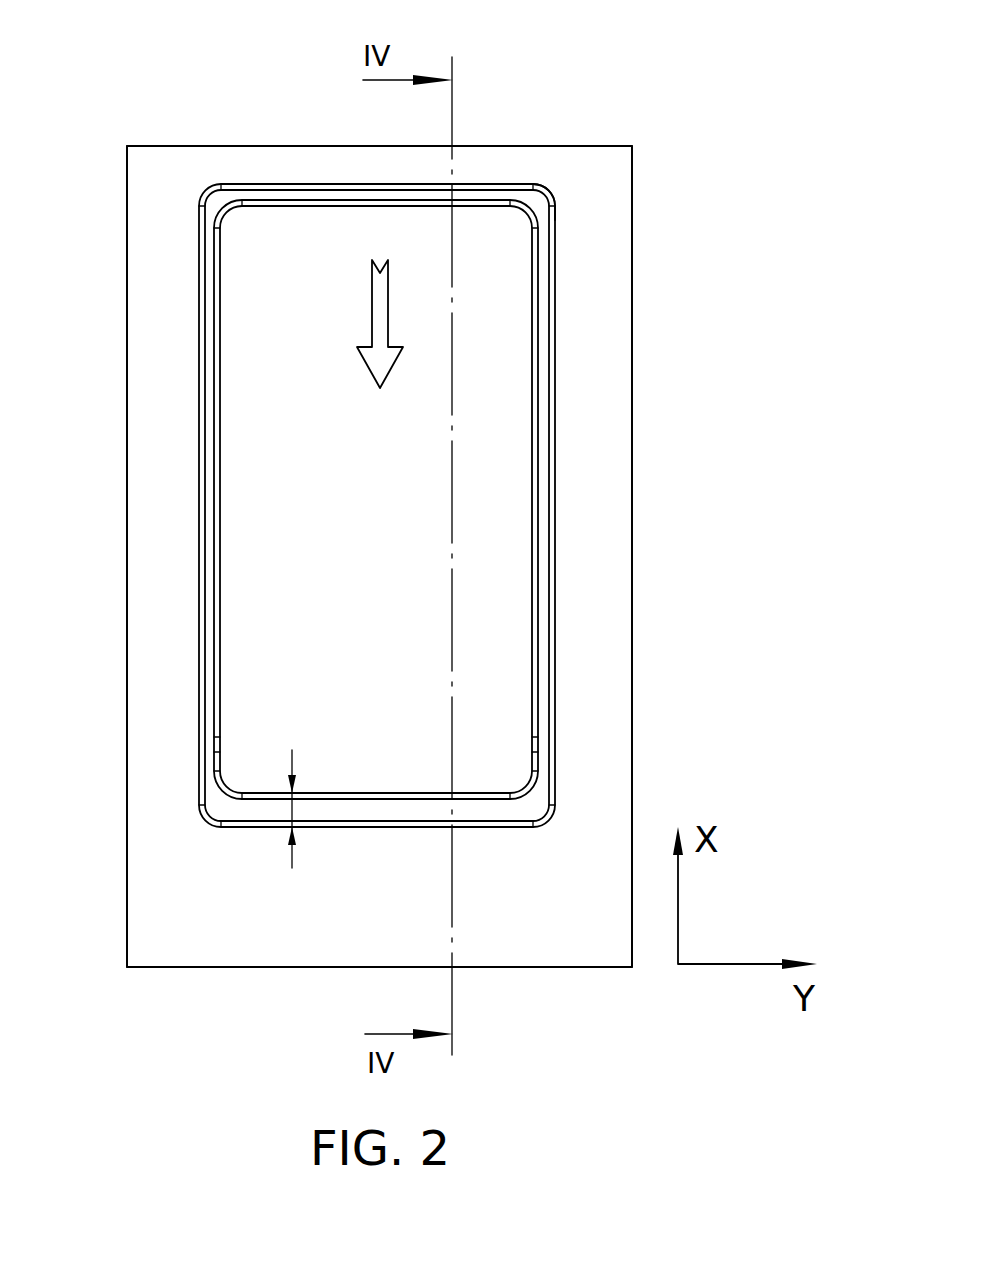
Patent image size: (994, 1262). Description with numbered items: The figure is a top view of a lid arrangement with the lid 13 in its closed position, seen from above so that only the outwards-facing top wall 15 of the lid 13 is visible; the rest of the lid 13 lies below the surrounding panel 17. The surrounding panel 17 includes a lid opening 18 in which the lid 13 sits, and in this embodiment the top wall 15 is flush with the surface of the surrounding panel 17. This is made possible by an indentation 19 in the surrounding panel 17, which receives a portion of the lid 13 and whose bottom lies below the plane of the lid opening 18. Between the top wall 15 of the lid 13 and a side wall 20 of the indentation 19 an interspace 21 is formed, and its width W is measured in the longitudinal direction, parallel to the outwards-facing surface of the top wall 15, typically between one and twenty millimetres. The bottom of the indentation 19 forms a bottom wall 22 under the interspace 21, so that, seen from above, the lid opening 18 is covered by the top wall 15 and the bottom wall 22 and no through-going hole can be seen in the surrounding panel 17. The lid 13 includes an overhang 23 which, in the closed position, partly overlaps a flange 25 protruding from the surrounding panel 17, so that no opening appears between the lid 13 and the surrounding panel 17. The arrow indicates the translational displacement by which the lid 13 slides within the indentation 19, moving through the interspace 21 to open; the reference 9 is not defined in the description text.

The holding device assembly 9 is at (722, 74).
The lid 13 is at (485, 357).
The top wall 15 is at (485, 580).
The surrounding panel 17 is at (187, 902).
The lid opening 18 is at (222, 798).
The indentation 19 is at (530, 808).
The side wall 20 is at (244, 821).
The interspace 21 is at (373, 808).
The bottom wall 22 is at (495, 808).
The overhang 23 is at (300, 222).
The flange 25 is at (539, 203).
The width W is at (283, 810).